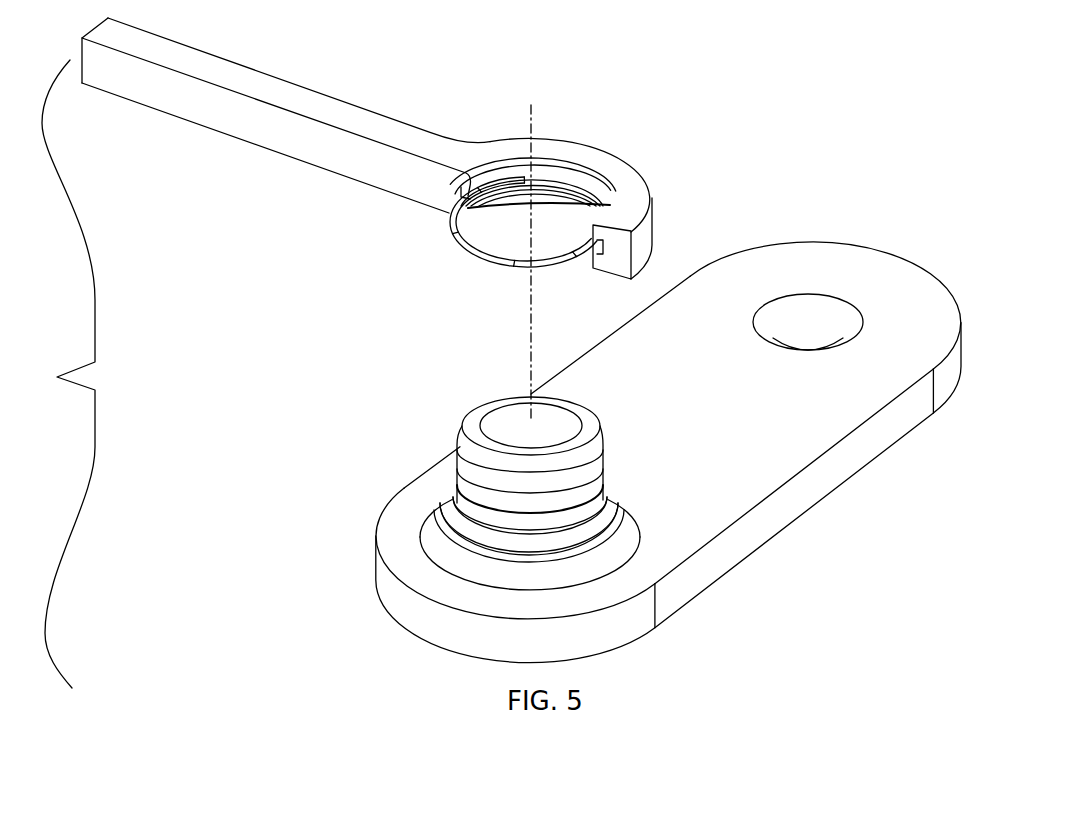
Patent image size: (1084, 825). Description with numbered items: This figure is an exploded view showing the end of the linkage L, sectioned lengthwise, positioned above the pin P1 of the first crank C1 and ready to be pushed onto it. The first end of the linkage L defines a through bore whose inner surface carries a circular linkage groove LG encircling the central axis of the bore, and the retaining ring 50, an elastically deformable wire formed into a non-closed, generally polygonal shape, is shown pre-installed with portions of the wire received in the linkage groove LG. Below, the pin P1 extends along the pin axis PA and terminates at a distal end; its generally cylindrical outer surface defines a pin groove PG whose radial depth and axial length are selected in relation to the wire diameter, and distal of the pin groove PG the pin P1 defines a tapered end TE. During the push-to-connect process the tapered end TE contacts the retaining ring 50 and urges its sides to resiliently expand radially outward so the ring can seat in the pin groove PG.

The linkage L is at (308, 100).
The linkage groove LG is at (461, 192).
The retaining ring 50 is at (456, 237).
The pin axis PA is at (530, 327).
The tapered end TE is at (588, 440).
The pin groove PG is at (600, 516).
The pin P1 is at (457, 475).
The first crank C1 is at (737, 476).